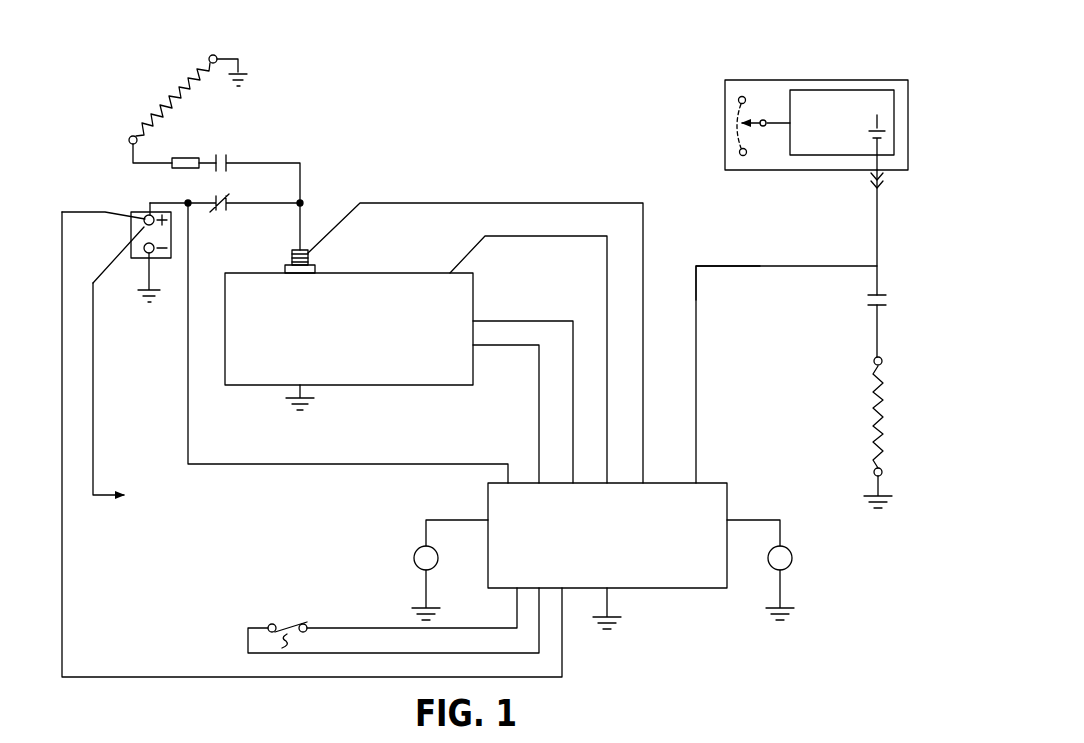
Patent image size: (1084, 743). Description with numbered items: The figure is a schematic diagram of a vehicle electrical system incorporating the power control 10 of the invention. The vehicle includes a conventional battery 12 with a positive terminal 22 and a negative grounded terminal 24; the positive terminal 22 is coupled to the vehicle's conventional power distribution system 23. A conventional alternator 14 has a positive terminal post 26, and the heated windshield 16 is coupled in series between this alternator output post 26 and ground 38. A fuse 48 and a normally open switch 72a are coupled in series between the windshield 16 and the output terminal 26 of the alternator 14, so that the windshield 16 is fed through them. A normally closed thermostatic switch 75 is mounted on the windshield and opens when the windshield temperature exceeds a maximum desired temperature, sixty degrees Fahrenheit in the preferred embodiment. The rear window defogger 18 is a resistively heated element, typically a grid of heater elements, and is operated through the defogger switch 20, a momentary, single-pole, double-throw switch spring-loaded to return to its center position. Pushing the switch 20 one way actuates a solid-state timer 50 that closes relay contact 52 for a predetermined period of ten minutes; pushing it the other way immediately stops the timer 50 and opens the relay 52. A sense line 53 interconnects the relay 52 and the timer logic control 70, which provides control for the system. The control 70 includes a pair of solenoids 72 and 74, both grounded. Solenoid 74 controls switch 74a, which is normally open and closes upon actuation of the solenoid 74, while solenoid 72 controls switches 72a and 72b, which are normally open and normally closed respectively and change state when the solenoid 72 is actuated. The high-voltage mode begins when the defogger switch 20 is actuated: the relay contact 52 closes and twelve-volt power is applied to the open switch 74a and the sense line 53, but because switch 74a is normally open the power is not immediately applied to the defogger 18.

The power control 10 is at (364, 530).
The battery 12 is at (131, 229).
The alternator 14 is at (400, 303).
The heated windshield 16 is at (193, 57).
The rear window defogger 18 is at (866, 426).
The defogger switch 20 is at (871, 60).
The positive terminal 22 is at (146, 216).
The power distribution system 23 is at (185, 506).
The negative grounded terminal 24 is at (146, 254).
The positive terminal post 26 is at (291, 253).
The ground 38 is at (260, 77).
The fuse 48 is at (186, 158).
The solid-state timer 50 is at (870, 103).
The relay contact 52 is at (885, 133).
The sense line 53 is at (745, 265).
The timer logic control 70 is at (677, 596).
The solenoid 72 is at (793, 557).
The normally open switch 72a is at (229, 157).
The normally closed switch 72b is at (229, 199).
The solenoid 74 is at (414, 562).
The normally open switch 74a is at (882, 293).
The thermostatic switch 75 is at (285, 625).